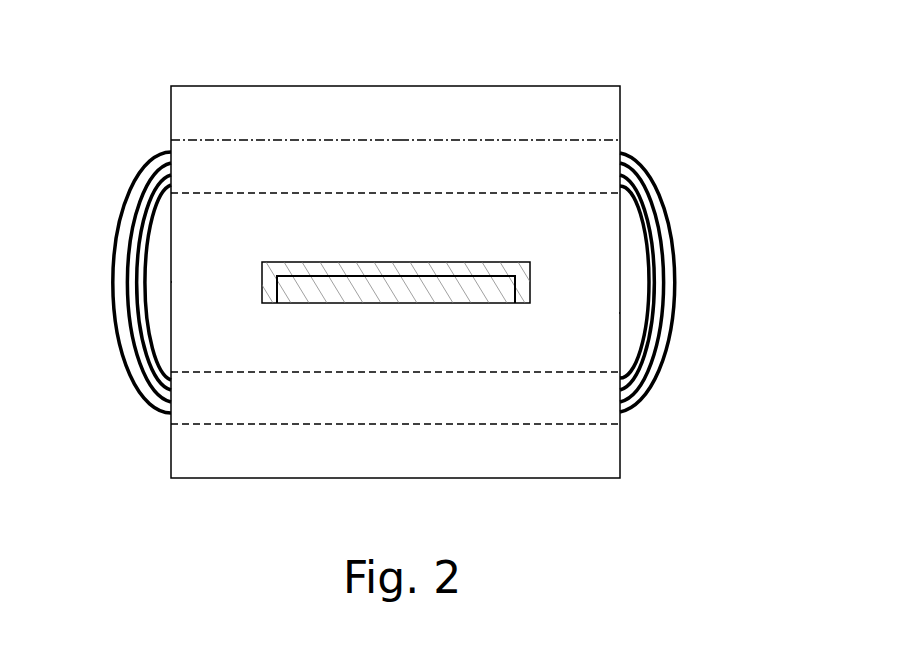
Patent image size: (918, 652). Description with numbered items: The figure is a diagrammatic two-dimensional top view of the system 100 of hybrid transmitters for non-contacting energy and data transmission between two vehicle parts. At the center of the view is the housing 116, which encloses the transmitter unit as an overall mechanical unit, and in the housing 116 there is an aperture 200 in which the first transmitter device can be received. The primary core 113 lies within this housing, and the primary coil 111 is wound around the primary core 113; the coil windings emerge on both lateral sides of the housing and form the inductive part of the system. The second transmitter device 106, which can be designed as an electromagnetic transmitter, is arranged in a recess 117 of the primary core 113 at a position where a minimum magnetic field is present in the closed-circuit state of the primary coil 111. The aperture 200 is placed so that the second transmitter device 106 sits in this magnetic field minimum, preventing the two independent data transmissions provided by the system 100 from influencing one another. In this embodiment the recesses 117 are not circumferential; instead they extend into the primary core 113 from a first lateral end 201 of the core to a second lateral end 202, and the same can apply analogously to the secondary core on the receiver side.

The system 100 is at (732, 223).
The second transmitter device 106 is at (412, 303).
The primary coil 111 is at (128, 242).
The primary core 113 is at (242, 138).
The housing 116 is at (322, 138).
The recess 117 is at (528, 138).
The aperture 200 is at (432, 276).
The first lateral end 201 is at (622, 313).
The second lateral end 202 is at (173, 291).